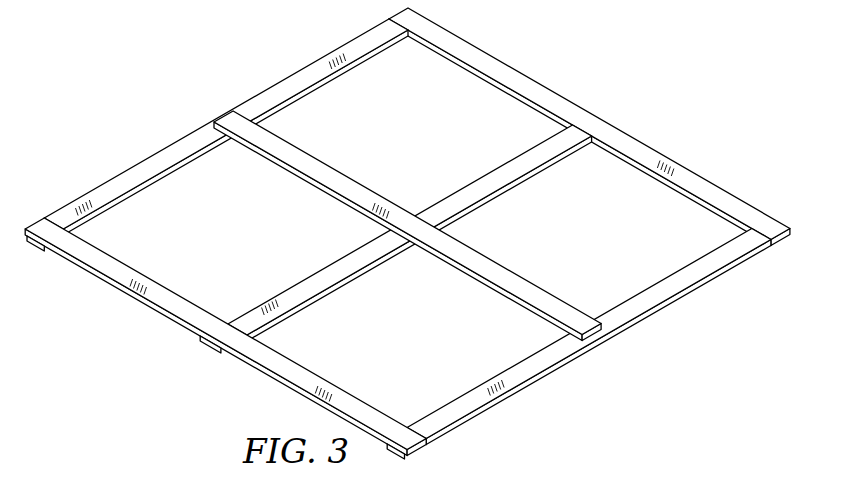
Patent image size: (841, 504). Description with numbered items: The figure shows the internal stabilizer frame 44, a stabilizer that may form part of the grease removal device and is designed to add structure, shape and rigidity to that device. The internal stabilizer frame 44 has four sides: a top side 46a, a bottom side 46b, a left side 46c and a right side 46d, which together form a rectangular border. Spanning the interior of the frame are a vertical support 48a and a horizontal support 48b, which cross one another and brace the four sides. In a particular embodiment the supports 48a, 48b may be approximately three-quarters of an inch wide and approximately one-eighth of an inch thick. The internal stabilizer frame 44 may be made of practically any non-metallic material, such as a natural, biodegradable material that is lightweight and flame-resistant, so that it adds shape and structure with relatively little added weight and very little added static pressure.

The internal stabilizer frame 44 is at (626, 128).
The top side 46a is at (525, 88).
The bottom side 46b is at (188, 310).
The left side 46c is at (157, 167).
The right side 46d is at (528, 375).
The vertical support 48a is at (467, 193).
The horizontal support 48b is at (340, 186).